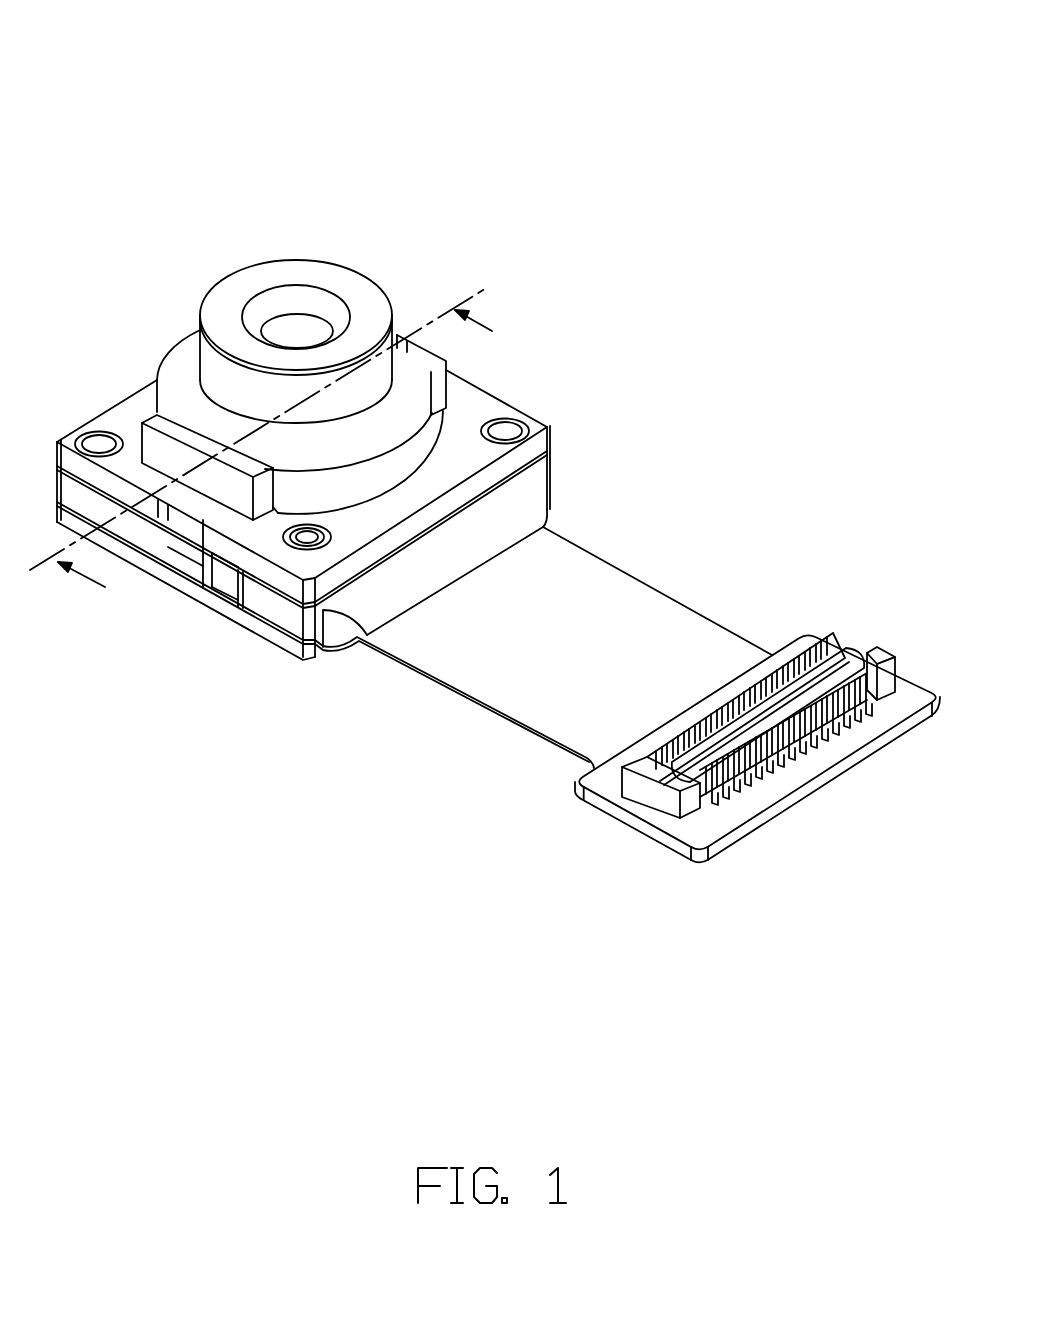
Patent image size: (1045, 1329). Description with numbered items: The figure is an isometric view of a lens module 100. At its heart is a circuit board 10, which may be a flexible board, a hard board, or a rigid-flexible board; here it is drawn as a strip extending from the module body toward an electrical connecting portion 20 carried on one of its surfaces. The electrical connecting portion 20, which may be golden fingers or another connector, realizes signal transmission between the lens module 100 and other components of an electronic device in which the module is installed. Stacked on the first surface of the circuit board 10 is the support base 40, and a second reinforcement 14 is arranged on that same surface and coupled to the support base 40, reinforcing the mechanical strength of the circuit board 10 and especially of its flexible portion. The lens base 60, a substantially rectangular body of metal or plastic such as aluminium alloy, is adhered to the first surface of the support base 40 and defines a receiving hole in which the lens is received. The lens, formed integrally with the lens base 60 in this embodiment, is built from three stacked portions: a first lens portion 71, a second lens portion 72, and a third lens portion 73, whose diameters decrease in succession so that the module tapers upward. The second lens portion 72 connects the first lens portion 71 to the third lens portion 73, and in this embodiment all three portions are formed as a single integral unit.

The lens module 100 is at (308, 70).
The circuit board 10 is at (530, 703).
The second reinforcement 14 is at (533, 502).
The electrical connecting portion 20 is at (833, 677).
The support base 40 is at (283, 612).
The lens base 60 is at (125, 417).
The first lens portion 71 is at (407, 458).
The second lens portion 72 is at (181, 385).
The third lens portion 73 is at (240, 380).